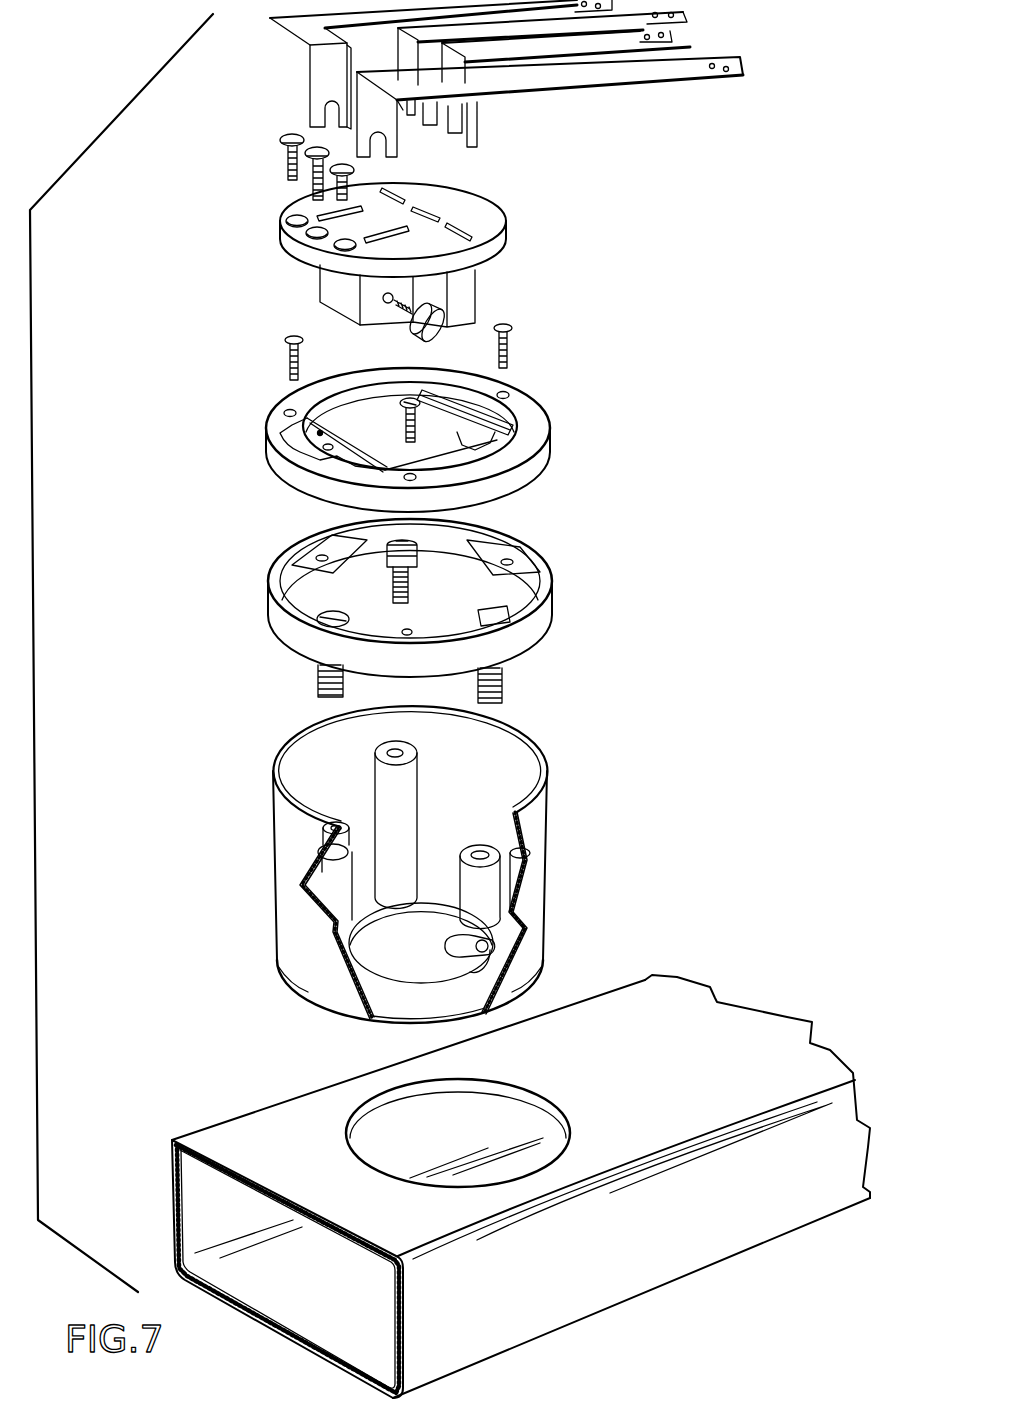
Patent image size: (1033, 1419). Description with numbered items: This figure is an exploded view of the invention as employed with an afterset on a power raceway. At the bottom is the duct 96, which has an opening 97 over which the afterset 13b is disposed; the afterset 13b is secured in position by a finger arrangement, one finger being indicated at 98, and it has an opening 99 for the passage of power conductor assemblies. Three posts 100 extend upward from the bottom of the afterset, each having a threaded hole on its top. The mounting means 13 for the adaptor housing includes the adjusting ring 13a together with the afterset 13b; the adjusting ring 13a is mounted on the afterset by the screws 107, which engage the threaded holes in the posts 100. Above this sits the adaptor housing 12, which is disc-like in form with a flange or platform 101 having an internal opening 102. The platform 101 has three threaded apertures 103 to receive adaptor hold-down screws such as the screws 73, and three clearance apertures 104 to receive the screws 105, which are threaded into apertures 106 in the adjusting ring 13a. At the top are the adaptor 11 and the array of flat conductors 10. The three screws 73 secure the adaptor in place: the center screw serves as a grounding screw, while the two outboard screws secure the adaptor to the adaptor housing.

The array of flat conductors 10 is at (298, 78).
The screws 73 is at (302, 180).
The adaptor 11 is at (290, 265).
The adaptor housing 12 is at (418, 421).
The flange or platform 101 is at (527, 413).
The internal opening 102 is at (520, 428).
The threaded apertures 103 is at (305, 420).
The clearance apertures 104 is at (292, 411).
The screws 105 is at (289, 363).
The mounting means 13 is at (391, 778).
The adjusting ring 13a is at (408, 611).
The apertures 106 is at (322, 556).
The screws 107 is at (393, 588).
The afterset 13b is at (407, 871).
The posts 100 is at (460, 864).
The finger 98 is at (477, 928).
The opening 99 is at (390, 966).
The duct 96 is at (521, 1186).
The opening 97 is at (545, 1114).